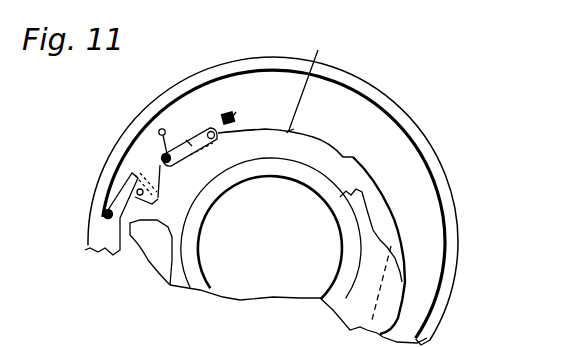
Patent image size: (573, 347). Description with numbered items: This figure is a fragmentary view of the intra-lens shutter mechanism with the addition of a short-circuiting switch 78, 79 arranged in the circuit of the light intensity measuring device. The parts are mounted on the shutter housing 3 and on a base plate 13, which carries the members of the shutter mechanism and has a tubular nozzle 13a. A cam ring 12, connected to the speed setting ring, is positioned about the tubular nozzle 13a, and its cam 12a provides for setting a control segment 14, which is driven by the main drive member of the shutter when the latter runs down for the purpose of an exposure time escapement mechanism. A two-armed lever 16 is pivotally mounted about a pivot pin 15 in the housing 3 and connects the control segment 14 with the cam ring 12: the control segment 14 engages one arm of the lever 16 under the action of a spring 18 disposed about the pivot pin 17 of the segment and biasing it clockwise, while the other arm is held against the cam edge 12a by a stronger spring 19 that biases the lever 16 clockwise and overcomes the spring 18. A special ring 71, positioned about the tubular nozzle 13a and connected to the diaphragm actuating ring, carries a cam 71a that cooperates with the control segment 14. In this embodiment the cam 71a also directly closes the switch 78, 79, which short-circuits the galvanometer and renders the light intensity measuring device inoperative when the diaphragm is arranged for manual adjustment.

The shutter housing 3 is at (412, 133).
The cam ring 12 is at (323, 150).
The cam 12a is at (320, 81).
The base plate 13 is at (420, 252).
The tubular nozzle 13a is at (343, 277).
The control segment 14 is at (120, 235).
The pivot pin 15 is at (162, 157).
The two-armed lever 16 is at (165, 152).
The pivot pin 17 is at (101, 214).
The spring 18 is at (103, 196).
The spring 19 is at (190, 145).
The special ring 71 is at (360, 300).
The cam 71a is at (390, 232).
The switch contact 78 is at (225, 112).
The switch contact 79 is at (234, 114).